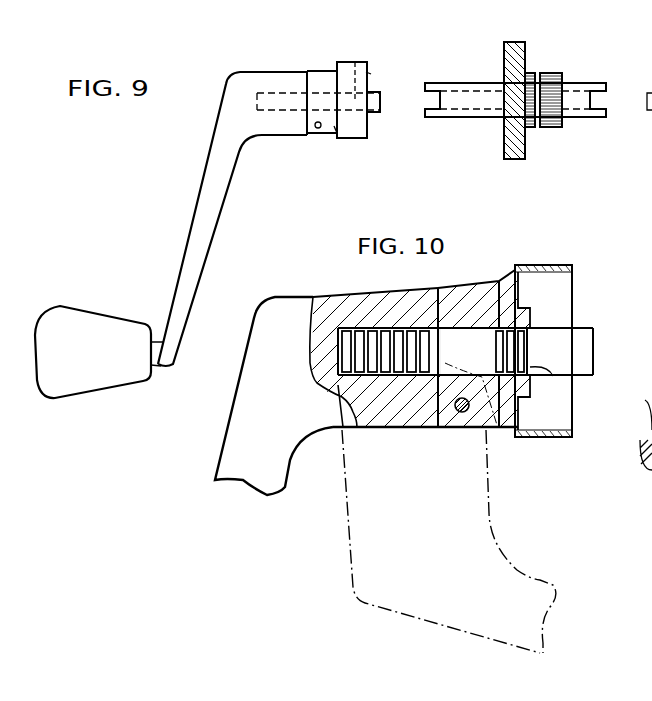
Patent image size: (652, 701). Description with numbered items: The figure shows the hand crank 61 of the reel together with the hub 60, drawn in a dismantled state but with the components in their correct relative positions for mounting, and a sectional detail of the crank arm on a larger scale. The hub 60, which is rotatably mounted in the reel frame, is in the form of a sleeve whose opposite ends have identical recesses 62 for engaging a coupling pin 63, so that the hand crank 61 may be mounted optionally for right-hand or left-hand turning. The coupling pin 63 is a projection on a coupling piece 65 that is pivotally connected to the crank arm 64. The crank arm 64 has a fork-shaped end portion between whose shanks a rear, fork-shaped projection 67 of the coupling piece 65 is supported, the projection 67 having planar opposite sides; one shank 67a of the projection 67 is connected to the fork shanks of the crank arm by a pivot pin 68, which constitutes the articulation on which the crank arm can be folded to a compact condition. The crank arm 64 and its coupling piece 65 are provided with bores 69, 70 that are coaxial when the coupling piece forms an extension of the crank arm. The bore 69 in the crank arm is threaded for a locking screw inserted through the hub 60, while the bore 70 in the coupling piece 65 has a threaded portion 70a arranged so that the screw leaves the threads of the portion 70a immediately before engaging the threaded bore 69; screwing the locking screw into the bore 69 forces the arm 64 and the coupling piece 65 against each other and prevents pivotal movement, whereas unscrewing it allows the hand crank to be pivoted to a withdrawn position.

In FIG. 9, the hub 60 is at (462, 83).
In FIG. 9, the hand crank 61 is at (181, 257).
In FIG. 9, the recesses 62 is at (437, 100).
In FIG. 9, the coupling pin 63 is at (383, 102).
In FIG. 10, the coupling pin 63 is at (590, 327).
In FIG. 9, the crank arm 64 is at (276, 130).
In FIG. 10, the crank arm 64 is at (384, 430).
In FIG. 9, the coupling piece 65 is at (356, 62).
In FIG. 10, the coupling piece 65 is at (534, 268).
In FIG. 9, the fork-shaped projection 67 is at (322, 83).
In FIG. 10, the fork-shaped projection 67 is at (466, 308).
In FIG. 9, the shank 67a is at (332, 130).
In FIG. 9, the pivot pin 68 is at (318, 130).
In FIG. 10, the pivot pin 68 is at (457, 430).
In FIG. 9, the bore 69 is at (269, 98).
In FIG. 10, the bore 69 is at (392, 328).
In FIG. 9, the bore 70 is at (372, 73).
In FIG. 10, the bore 70 is at (544, 343).
In FIG. 10, the threaded portion 70a is at (553, 377).